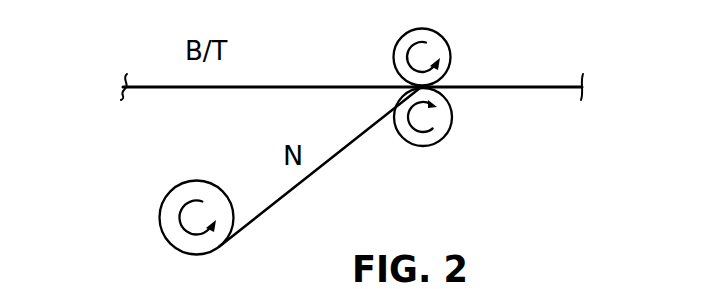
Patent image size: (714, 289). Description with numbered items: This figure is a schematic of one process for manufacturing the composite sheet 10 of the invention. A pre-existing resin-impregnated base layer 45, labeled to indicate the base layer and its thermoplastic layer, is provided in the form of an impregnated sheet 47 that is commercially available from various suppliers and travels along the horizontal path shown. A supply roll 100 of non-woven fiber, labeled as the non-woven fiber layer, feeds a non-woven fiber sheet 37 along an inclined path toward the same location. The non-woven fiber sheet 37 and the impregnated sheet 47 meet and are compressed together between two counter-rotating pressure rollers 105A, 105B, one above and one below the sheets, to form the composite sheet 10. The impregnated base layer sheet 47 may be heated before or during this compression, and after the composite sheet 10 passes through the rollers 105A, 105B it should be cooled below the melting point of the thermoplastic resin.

The composite sheet 10 is at (557, 86).
The resin-impregnated base layer 45 is at (147, 86).
The impregnated base layer sheet 47 is at (352, 86).
The non-woven fiber sheet 37 is at (304, 181).
The supply roll 100 is at (160, 218).
The pressure roller 105A is at (449, 44).
The pressure roller 105B is at (447, 133).